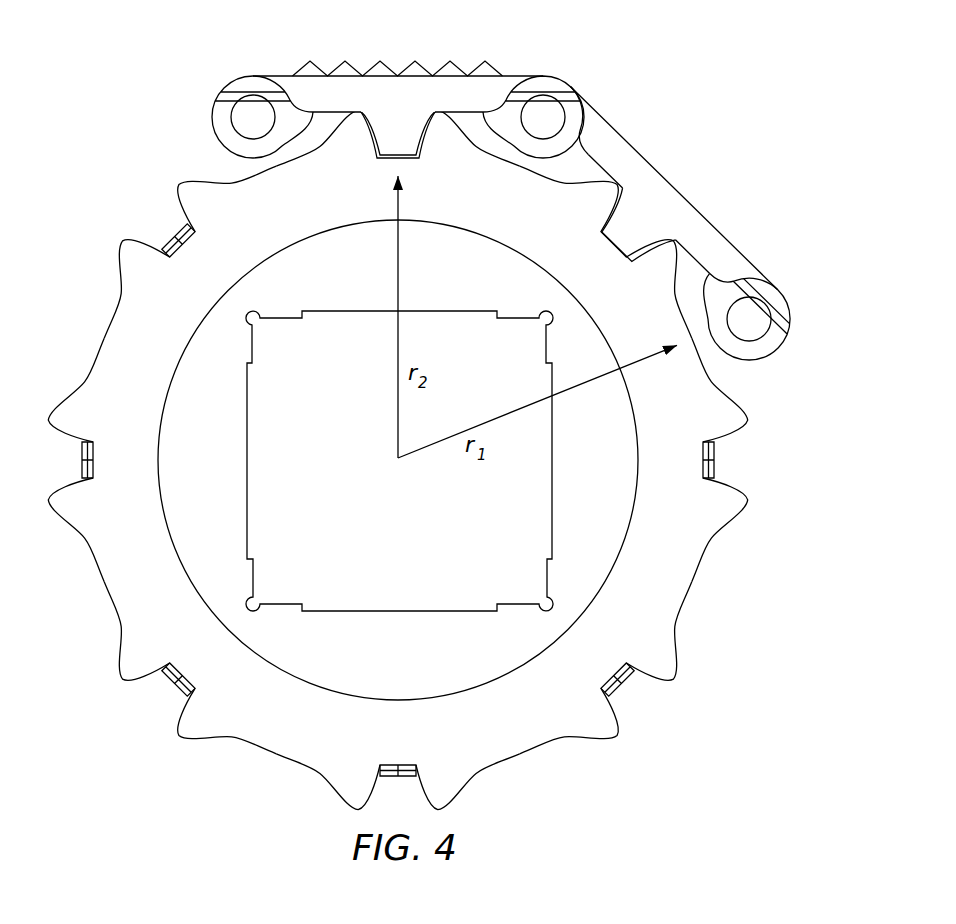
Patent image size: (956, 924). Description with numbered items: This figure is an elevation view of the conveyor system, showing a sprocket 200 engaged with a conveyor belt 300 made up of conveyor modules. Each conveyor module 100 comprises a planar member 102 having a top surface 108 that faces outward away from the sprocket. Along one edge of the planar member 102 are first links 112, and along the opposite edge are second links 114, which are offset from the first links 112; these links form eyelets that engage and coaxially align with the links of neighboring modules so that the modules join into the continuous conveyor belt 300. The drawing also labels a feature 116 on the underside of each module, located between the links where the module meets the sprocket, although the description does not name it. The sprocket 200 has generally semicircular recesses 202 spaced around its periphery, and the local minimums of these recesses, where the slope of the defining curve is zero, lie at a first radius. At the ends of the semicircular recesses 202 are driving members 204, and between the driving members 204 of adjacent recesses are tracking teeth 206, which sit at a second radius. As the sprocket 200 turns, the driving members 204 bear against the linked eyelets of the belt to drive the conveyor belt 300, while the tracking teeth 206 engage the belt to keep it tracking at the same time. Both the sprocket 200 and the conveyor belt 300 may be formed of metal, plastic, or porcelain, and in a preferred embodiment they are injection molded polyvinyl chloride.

The conveyor module 100 is at (510, 80).
The planar member 102 is at (412, 104).
The top surface 108 is at (472, 75).
The first links 112 is at (530, 80).
The second links 114 is at (257, 74).
The tab notch 116 is at (413, 145).
The sprocket 200 is at (422, 459).
The semicircular recesses 202 is at (277, 753).
The driving members 204 is at (173, 738).
The tracking teeth 206 is at (170, 680).
The conveyor belt 300 is at (186, 122).